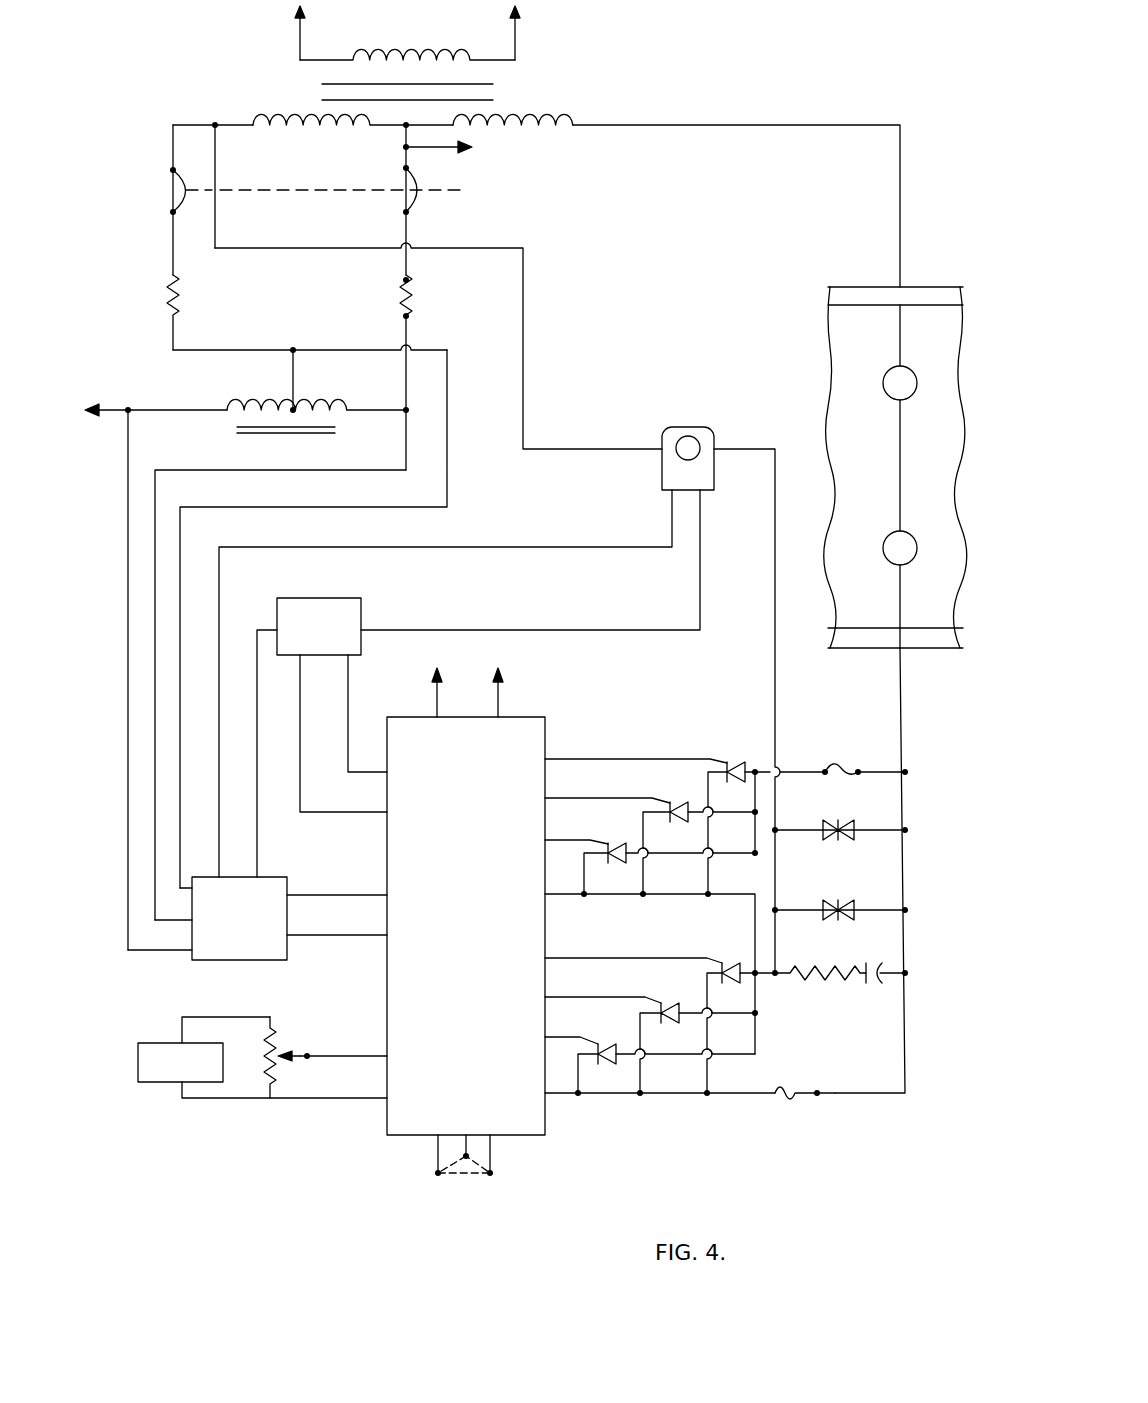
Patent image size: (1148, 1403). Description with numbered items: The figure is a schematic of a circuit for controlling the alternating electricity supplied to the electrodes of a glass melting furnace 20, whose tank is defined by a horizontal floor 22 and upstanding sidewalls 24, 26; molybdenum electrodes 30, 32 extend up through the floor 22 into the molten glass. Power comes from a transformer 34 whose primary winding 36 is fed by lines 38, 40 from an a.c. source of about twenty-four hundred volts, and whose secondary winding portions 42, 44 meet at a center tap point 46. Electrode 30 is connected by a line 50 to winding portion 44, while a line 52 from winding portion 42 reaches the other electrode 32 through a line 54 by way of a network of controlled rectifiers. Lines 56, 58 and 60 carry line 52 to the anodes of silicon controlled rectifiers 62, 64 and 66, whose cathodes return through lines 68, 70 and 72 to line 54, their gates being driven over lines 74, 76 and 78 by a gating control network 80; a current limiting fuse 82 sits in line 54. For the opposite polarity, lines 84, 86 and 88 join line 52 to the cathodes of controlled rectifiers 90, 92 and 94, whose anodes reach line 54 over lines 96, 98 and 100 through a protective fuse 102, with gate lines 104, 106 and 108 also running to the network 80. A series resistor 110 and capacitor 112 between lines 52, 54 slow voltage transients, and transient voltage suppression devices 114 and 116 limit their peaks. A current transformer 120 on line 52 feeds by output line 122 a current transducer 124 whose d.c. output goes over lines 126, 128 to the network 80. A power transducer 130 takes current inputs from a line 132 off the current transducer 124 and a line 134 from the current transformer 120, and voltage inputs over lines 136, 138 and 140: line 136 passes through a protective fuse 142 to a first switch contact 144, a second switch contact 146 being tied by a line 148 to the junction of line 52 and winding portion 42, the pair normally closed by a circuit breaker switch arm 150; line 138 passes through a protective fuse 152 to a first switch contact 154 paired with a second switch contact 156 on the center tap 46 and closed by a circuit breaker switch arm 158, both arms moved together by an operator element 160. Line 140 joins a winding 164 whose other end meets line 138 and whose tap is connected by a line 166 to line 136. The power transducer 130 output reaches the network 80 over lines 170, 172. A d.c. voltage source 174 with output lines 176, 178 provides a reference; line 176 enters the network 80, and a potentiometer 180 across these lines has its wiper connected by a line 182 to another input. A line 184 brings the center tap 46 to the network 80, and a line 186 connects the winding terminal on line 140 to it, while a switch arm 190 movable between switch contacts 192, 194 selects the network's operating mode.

The glass melting furnace 20 is at (827, 336).
The floor 22 is at (888, 480).
The sidewall 24 is at (925, 287).
The sidewall 26 is at (945, 648).
The electrode 30 is at (903, 400).
The electrode 32 is at (903, 531).
The transformer 34 is at (490, 84).
The primary winding 36 is at (402, 50).
The line 38 is at (300, 33).
The line 40 is at (515, 33).
The secondary winding portion 42 is at (275, 115).
The secondary winding portion 44 is at (540, 118).
The center tap point 46 is at (404, 127).
The line 50 is at (780, 125).
The line 52 is at (523, 312).
The line 54 is at (920, 941).
The line 56 is at (740, 960).
The line 58 is at (755, 1005).
The line 60 is at (758, 1046).
The silicon controlled rectifier 62 is at (730, 960).
The silicon controlled rectifier 64 is at (666, 1003).
The silicon controlled rectifier 66 is at (604, 1044).
The line 68 is at (686, 1068).
The line 70 is at (643, 1081).
The line 72 is at (581, 1081).
The line 74 is at (590, 957).
The line 76 is at (590, 997).
The line 78 is at (560, 1037).
The gating control network 80 is at (549, 1119).
The current limiting fuse 82 is at (800, 1093).
The line 84 is at (712, 878).
The line 86 is at (648, 878).
The line 88 is at (588, 878).
The silicon controlled rectifier 90 is at (730, 760).
The silicon controlled rectifier 92 is at (680, 802).
The silicon controlled rectifier 94 is at (618, 843).
The line 96 is at (748, 760).
The line 98 is at (723, 830).
The line 100 is at (650, 853).
The protective fuse 102 is at (842, 770).
The line 104 is at (600, 758).
The line 106 is at (612, 797).
The line 108 is at (565, 840).
The resistor 110 is at (805, 968).
The capacitor 112 is at (876, 985).
The transient voltage suppression device 114 is at (843, 820).
The transient voltage suppression device 116 is at (845, 900).
The current transformer 120 is at (665, 438).
The output line 122 is at (622, 625).
The current transducer 124 is at (358, 600).
The line 126 is at (352, 812).
The line 128 is at (349, 695).
The power transducer 130 is at (290, 911).
The line 132 is at (257, 848).
The line 134 is at (355, 547).
The line 136 is at (447, 455).
The line 138 is at (155, 810).
The line 140 is at (128, 936).
The protective fuse 142 is at (165, 298).
The first switch contact 144 is at (172, 212).
The second switch contact 146 is at (172, 170).
The line 148 is at (195, 125).
The circuit breaker switch arm 150 is at (160, 198).
The protective fuse 152 is at (410, 300).
The first switch contact 154 is at (418, 212).
The second switch contact 156 is at (418, 172).
The circuit breaker switch arm 158 is at (412, 200).
The operator element 160 is at (302, 190).
The winding 164 is at (262, 398).
The line 166 is at (300, 374).
The line 170 is at (365, 895).
The line 172 is at (355, 938).
The d.c. voltage source 174 is at (160, 1043).
The output line 176 is at (245, 1098).
The output line 178 is at (205, 1017).
The potentiometer 180 is at (280, 1040).
The line 182 is at (333, 1056).
The line 184 is at (455, 150).
The line 186 is at (102, 408).
The switch arm 190 is at (480, 1170).
The switch contact 192 is at (436, 1172).
The switch contact 194 is at (492, 1172).